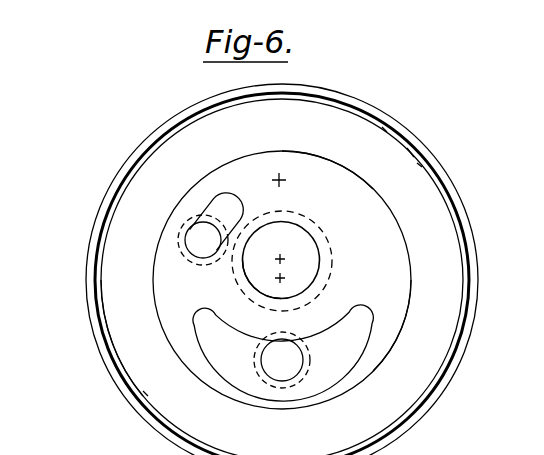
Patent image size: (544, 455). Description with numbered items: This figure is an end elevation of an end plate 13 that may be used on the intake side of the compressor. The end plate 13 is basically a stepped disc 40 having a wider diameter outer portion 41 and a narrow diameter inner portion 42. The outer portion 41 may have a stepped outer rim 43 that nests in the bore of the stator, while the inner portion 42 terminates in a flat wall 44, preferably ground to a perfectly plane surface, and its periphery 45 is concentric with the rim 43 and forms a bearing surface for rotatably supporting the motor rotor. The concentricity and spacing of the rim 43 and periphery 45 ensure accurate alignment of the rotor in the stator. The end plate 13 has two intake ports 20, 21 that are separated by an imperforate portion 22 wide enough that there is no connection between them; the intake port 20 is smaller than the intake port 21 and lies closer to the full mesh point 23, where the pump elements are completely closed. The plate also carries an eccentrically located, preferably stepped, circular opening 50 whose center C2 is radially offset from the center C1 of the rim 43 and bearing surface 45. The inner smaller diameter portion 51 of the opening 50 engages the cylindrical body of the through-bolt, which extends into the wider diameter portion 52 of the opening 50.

The end plate 13 is at (445, 338).
The intake port 20 is at (200, 238).
The intake port 21 is at (280, 372).
The imperforate portion 22 is at (205, 280).
The full mesh point 23 is at (287, 177).
The stepped disc 40 is at (420, 178).
The outer portion 41 is at (135, 353).
The inner portion 42 is at (390, 293).
The stepped outer rim 43 is at (86, 294).
The flat wall 44 is at (340, 193).
The periphery 45 is at (404, 255).
The circular opening 50 is at (318, 251).
The inner smaller diameter portion 51 is at (314, 281).
The wider diameter portion 52 is at (319, 227).
The center C1 is at (280, 278).
The center C2 is at (280, 259).